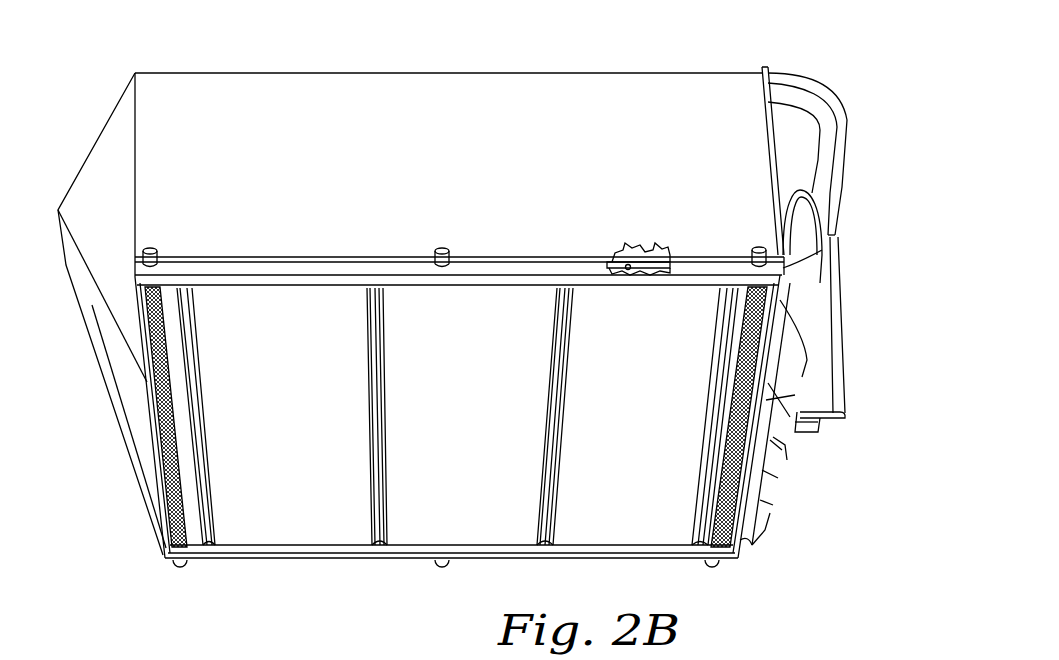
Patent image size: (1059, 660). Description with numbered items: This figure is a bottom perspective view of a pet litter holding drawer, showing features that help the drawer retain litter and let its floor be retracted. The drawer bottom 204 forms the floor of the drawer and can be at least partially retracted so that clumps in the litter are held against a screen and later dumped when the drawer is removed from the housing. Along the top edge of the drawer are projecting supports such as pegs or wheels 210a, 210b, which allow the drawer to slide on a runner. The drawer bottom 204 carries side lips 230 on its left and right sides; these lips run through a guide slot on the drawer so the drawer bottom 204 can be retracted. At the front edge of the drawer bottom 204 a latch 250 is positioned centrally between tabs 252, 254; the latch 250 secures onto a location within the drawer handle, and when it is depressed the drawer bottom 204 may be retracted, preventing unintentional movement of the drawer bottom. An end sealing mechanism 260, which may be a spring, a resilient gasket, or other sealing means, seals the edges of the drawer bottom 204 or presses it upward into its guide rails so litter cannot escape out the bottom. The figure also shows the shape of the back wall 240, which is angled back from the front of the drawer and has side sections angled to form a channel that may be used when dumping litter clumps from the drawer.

The drawer bottom 204 is at (477, 432).
The wheel 210a is at (153, 248).
The wheel 210b is at (443, 246).
The side lip 230 is at (641, 252).
The back wall 240 is at (112, 127).
The latch 250 is at (807, 428).
The tab 252 is at (803, 221).
The tab 254 is at (757, 538).
The end sealing mechanism 260 is at (170, 528).